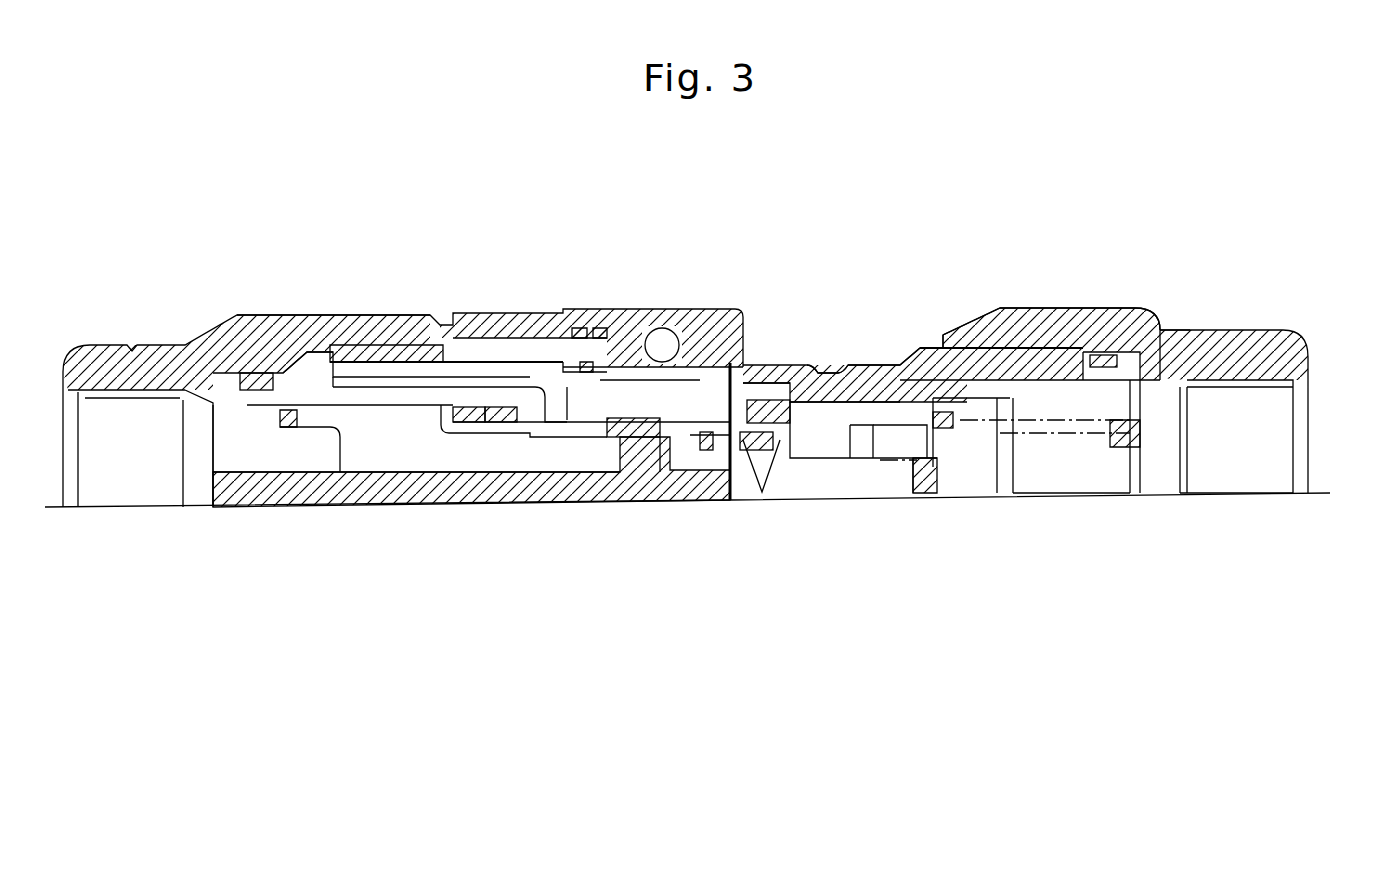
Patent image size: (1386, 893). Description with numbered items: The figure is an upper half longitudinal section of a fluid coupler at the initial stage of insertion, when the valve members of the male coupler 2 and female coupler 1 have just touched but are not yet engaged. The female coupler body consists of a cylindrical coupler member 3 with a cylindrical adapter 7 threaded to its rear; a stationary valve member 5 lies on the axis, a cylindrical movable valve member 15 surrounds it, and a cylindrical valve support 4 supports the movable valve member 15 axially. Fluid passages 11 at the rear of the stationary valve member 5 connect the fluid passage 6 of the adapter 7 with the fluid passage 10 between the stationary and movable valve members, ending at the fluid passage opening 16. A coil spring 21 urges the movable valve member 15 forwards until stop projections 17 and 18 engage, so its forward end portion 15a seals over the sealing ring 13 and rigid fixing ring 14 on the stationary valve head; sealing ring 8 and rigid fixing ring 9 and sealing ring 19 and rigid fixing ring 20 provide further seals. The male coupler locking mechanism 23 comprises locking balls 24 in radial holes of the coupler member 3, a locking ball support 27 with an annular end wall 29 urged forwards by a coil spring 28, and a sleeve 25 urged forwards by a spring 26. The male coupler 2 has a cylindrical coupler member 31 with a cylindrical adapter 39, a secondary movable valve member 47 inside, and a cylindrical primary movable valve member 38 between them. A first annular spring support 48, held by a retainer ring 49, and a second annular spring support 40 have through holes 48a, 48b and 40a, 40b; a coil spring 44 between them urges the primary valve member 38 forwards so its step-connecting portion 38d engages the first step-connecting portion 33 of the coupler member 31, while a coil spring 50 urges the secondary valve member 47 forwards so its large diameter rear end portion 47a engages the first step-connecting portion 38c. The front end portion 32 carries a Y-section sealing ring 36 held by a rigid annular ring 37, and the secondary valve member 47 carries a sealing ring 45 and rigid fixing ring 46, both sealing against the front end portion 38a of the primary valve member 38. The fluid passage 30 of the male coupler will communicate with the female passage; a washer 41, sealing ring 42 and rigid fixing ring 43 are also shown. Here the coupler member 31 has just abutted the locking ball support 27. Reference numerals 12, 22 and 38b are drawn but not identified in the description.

The female coupler 1 is at (289, 283).
The male coupler 2 is at (1030, 288).
The cylindrical coupler member 3 is at (427, 358).
The cylindrical valve support 4 is at (345, 362).
The stationary valve member 5 is at (415, 505).
The fluid passage 6 is at (100, 423).
The cylindrical adapter 7 is at (123, 377).
The sealing ring 8 is at (268, 378).
The rigid fixing ring 9 is at (288, 380).
The fluid passage 10 is at (347, 500).
The fluid passages 11 is at (237, 437).
The valve face 12 is at (737, 500).
The sealing ring 13 is at (688, 470).
The rigid fixing ring 14 is at (710, 470).
The cylindrical movable valve member 15 is at (525, 400).
The forward end portion 15a is at (725, 395).
The fluid passage opening 16 is at (643, 480).
The stop projection 17 is at (525, 480).
The stop projection 18 is at (508, 480).
The sealing ring 19 is at (485, 385).
The rigid fixing ring 20 is at (505, 390).
The coil spring 21 is at (375, 485).
The valve member 22 is at (697, 375).
The male coupler locking mechanism 23 is at (654, 293).
The locking balls 24 is at (675, 355).
The sleeve 25 is at (610, 320).
The spring 26 is at (566, 330).
The locking ball support 27 is at (603, 480).
The coil spring 28 is at (395, 372).
The annular end wall 29 is at (772, 375).
The fluid passage 30 is at (1092, 350).
The cylindrical coupler member 31 is at (935, 345).
The front end portion 32 is at (795, 365).
The first step-connecting portion 33 is at (852, 378).
The sealing ring 36 is at (835, 365).
The rigid annular ring 37 is at (820, 360).
The primary movable valve member 38 is at (960, 345).
The front end portion 38a is at (748, 480).
The housing outer surface 38b is at (1012, 330).
The first step-connecting portion 38c is at (865, 485).
The step-connecting portion 38d is at (803, 485).
The cylindrical adapter 39 is at (1245, 325).
The second annular spring support 40 is at (1215, 332).
The through hole 40a is at (1190, 345).
The through hole 40b is at (1160, 480).
The washer 41 is at (1150, 345).
The sealing ring 42 is at (1130, 352).
The rigid fixing ring 43 is at (1100, 352).
The coil spring 44 is at (1110, 470).
The sealing ring 45 is at (780, 480).
The rigid fixing ring 46 is at (765, 480).
The secondary movable valve member 47 is at (815, 485).
The large diameter rear end portion 47a is at (900, 485).
The first annular spring support 48 is at (972, 493).
The through hole 48a is at (925, 490).
The through hole 48b is at (1003, 493).
The retainer ring 49 is at (1050, 360).
The coil spring 50 is at (905, 350).